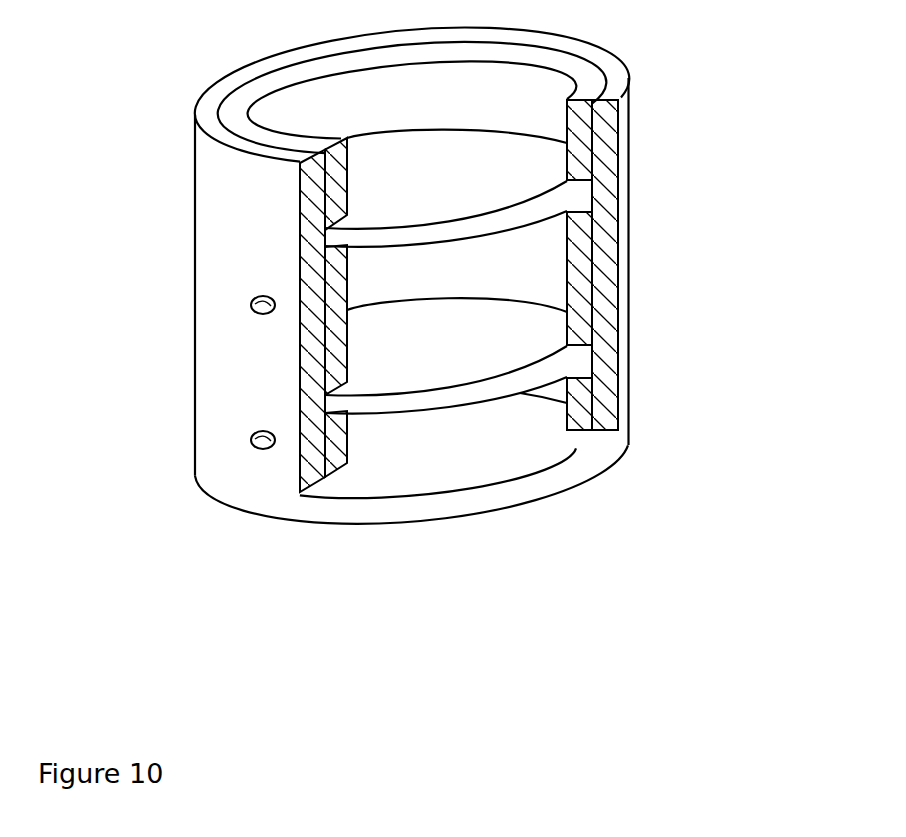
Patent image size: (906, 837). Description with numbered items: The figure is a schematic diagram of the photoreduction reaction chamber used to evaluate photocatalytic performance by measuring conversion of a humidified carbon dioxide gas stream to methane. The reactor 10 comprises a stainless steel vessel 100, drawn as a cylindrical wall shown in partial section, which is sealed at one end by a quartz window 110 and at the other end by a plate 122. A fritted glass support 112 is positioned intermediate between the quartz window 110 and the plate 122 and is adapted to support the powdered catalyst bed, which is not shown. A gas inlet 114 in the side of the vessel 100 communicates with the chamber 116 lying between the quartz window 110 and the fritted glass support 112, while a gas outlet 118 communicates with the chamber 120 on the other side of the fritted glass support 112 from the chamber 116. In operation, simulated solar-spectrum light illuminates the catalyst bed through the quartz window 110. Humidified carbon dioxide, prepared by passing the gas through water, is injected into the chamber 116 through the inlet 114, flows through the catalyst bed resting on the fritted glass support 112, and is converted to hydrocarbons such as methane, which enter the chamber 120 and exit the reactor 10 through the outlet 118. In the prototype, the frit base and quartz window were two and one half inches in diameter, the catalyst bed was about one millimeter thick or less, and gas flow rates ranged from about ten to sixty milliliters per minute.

The reactor 10 is at (191, 71).
The stainless steel vessel 100 is at (207, 232).
The quartz window 110 is at (453, 155).
The fritted glass support 112 is at (478, 333).
The gas inlet 114 is at (250, 303).
The chamber 116 is at (518, 282).
The gas outlet 118 is at (250, 438).
The chamber 120 is at (518, 447).
The plate 122 is at (573, 473).